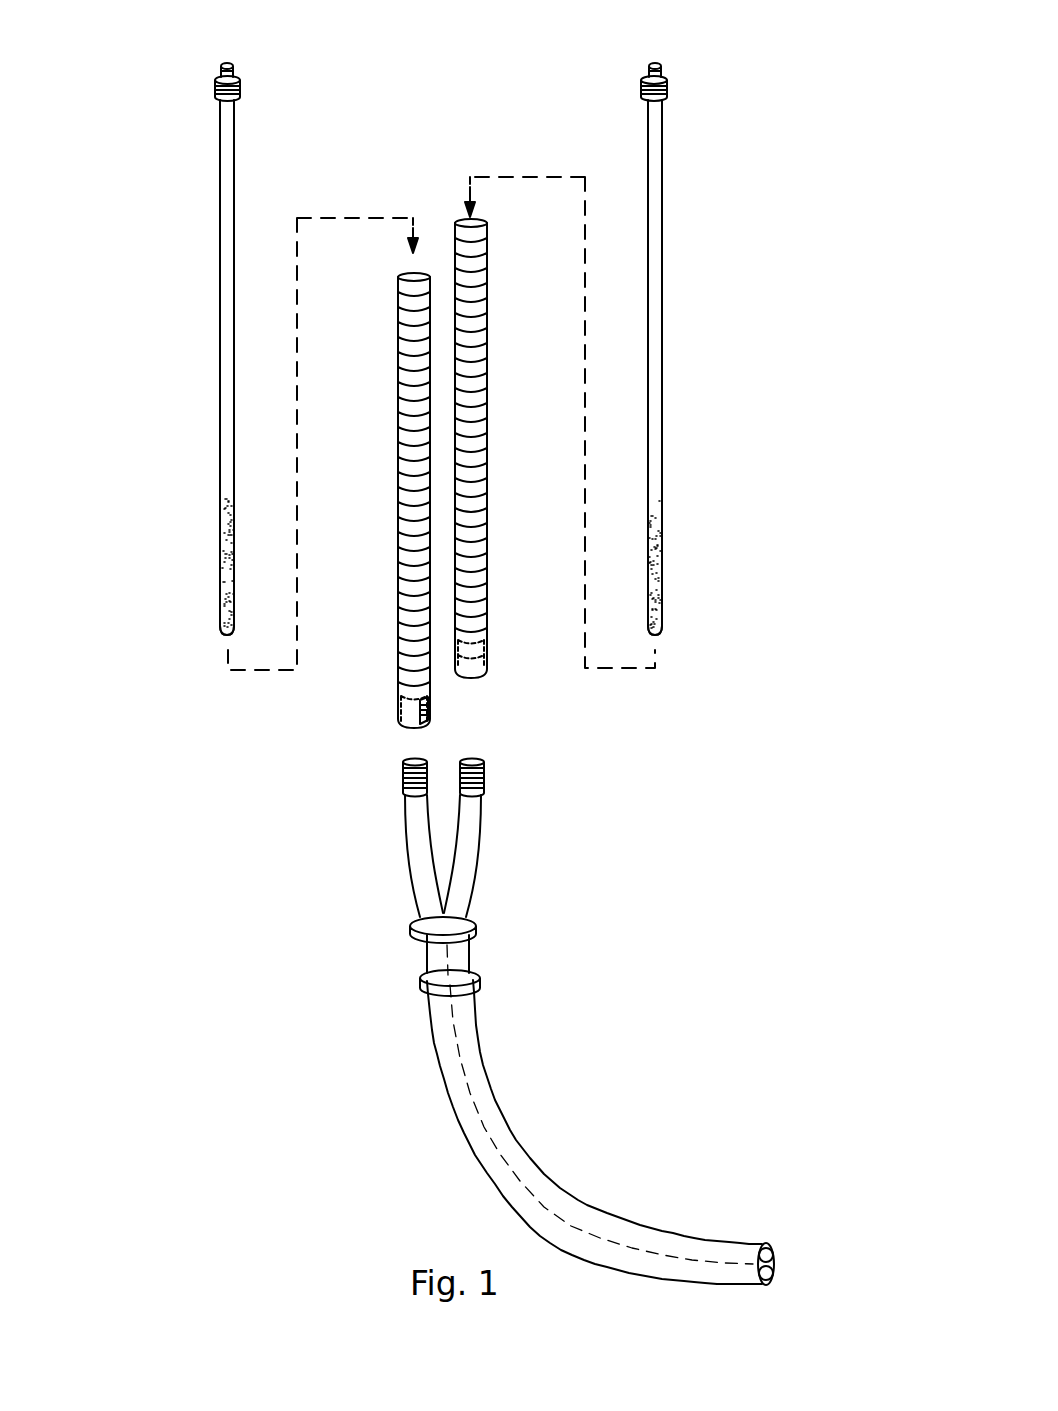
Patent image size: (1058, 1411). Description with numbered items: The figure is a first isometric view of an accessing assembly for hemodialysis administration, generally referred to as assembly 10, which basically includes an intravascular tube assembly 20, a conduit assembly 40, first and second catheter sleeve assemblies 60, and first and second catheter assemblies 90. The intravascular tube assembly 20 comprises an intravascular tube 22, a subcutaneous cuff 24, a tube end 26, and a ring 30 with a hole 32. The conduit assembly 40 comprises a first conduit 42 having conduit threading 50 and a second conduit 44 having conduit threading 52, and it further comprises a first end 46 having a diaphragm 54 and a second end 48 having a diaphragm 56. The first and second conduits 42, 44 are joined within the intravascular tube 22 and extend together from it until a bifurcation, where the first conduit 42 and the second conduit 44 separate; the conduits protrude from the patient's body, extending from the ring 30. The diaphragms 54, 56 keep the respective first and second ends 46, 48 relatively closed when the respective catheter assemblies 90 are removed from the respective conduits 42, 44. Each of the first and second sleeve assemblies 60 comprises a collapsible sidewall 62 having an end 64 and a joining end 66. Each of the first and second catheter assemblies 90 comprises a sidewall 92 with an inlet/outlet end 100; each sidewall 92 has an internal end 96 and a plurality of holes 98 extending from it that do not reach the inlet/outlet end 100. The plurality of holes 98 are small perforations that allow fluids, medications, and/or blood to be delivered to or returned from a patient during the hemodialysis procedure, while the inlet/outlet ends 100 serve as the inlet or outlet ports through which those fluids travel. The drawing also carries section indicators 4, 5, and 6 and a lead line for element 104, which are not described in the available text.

The section line 4- 4 is at (228, 56).
The section line 5- 5 is at (470, 627).
The section line 6- 6 is at (470, 757).
The accessing assembly for hemodialysis administration 10 is at (825, 118).
The intravascular tube assembly 20 is at (612, 1112).
The intravascular tube 22 is at (448, 1060).
The subcutaneous cuff 24 is at (481, 978).
The tube end 26 is at (775, 1262).
The ring 30 is at (440, 924).
The hole 32 is at (474, 918).
The conduit assembly 40 is at (544, 1013).
The first conduit 42 is at (405, 825).
The second conduit 44 is at (477, 838).
The first end 46 is at (317, 789).
The second end 48 is at (545, 773).
The conduit threading 50 is at (403, 783).
The conduit threading 52 is at (484, 778).
The diaphragm 54 is at (403, 758).
The diaphragm 56 is at (476, 760).
The catheter sleeve assembly 60 is at (446, 455).
The collapsible sidewall 62 is at (412, 345).
The end 64 is at (405, 279).
The joining end 66 is at (412, 728).
The catheter assembly 90 is at (449, 336).
The sidewall 92 is at (222, 352).
The internal end 96 is at (226, 636).
The plurality of holes 98 is at (222, 535).
The inlet/outlet end 100 is at (229, 63).
The stylet handle 104 is at (241, 88).